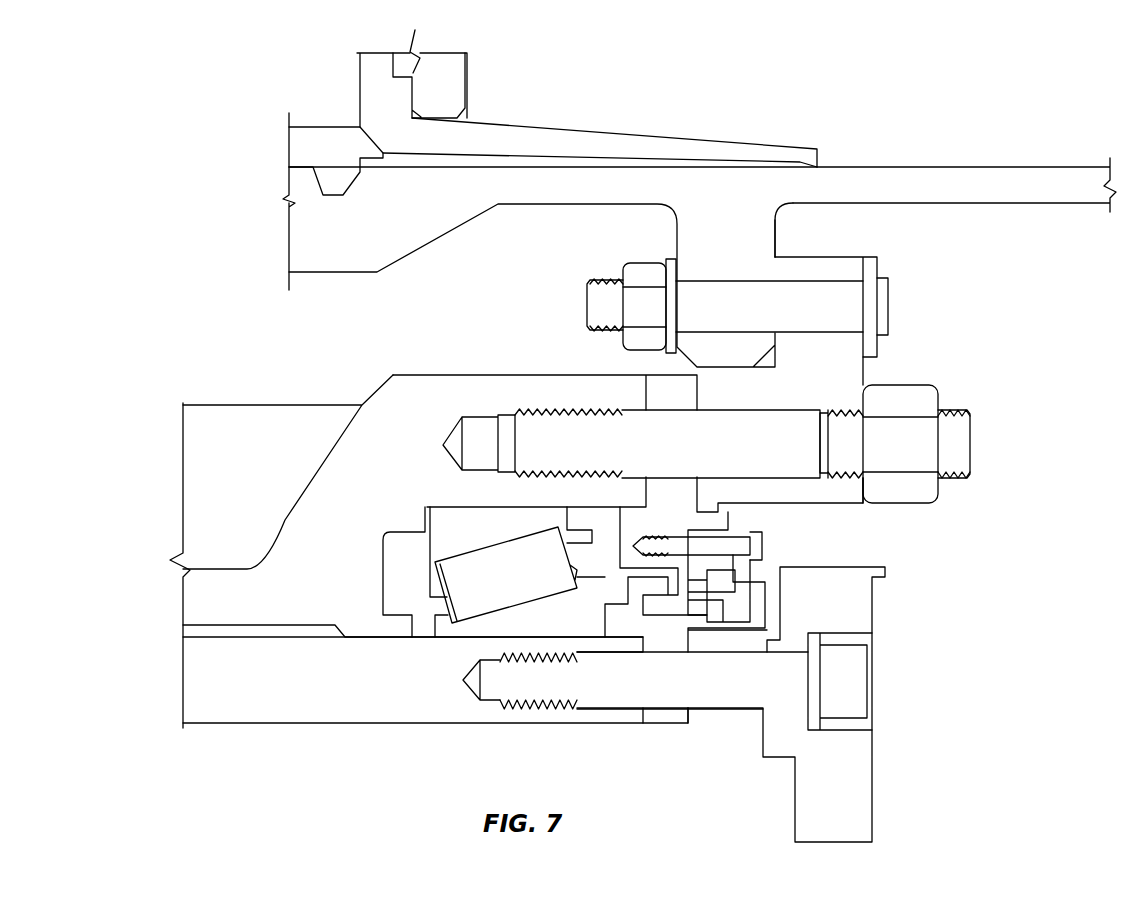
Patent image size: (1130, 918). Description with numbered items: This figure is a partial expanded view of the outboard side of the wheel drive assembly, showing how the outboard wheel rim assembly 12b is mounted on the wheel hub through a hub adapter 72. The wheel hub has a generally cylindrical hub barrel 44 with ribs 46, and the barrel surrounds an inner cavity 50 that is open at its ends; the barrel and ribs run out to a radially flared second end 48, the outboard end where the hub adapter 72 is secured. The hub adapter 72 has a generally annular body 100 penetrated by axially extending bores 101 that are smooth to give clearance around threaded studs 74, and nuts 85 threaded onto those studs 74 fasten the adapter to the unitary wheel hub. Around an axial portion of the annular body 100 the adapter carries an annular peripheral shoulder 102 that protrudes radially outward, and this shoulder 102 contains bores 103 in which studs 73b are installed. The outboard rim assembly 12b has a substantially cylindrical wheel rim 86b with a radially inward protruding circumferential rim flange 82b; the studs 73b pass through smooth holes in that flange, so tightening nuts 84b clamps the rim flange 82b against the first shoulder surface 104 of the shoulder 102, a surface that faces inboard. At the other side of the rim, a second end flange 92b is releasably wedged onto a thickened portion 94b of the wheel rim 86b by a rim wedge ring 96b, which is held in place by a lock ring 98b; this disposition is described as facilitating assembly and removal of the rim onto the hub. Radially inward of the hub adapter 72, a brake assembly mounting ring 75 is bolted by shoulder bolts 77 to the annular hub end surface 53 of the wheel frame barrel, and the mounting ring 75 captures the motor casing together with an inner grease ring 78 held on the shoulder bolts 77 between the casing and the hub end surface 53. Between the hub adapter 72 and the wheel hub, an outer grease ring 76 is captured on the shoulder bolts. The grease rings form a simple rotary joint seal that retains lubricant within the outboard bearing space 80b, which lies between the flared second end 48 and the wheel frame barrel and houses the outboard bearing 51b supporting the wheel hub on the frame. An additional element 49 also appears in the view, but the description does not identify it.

The outboard wheel rim assembly 12b is at (895, 110).
The second end flange 92b is at (458, 78).
The rim wedge ring 96b is at (553, 130).
The lock ring 98b is at (297, 137).
The thickened portion 94b is at (297, 232).
The wheel rim 86b is at (938, 168).
The first shoulder surface 104 is at (773, 270).
The annular peripheral shoulder 102 is at (825, 257).
The bores 103 is at (827, 282).
The rim flange 82b is at (727, 261).
The nuts 84b is at (643, 260).
The studs 73b is at (592, 298).
The second end 48 is at (652, 387).
The bolt 49 is at (472, 415).
The axially-extending bores 101 is at (760, 445).
The hub adapter 72 is at (867, 373).
The nuts 85 is at (953, 388).
The threaded studs 74 is at (970, 423).
The annular body 100 is at (822, 473).
The ribs 46 is at (240, 452).
The hub barrel 44 is at (330, 598).
The outboard bearing space 80b is at (415, 590).
The outboard bearing 51b is at (448, 528).
The outer grease ring 76 is at (722, 520).
The brake assembly mounting ring 75 is at (832, 615).
The shoulder bolts 77 is at (860, 665).
The inner grease ring 78 is at (628, 632).
The inner cavity 50 is at (383, 723).
The hub end surface 53 is at (645, 715).